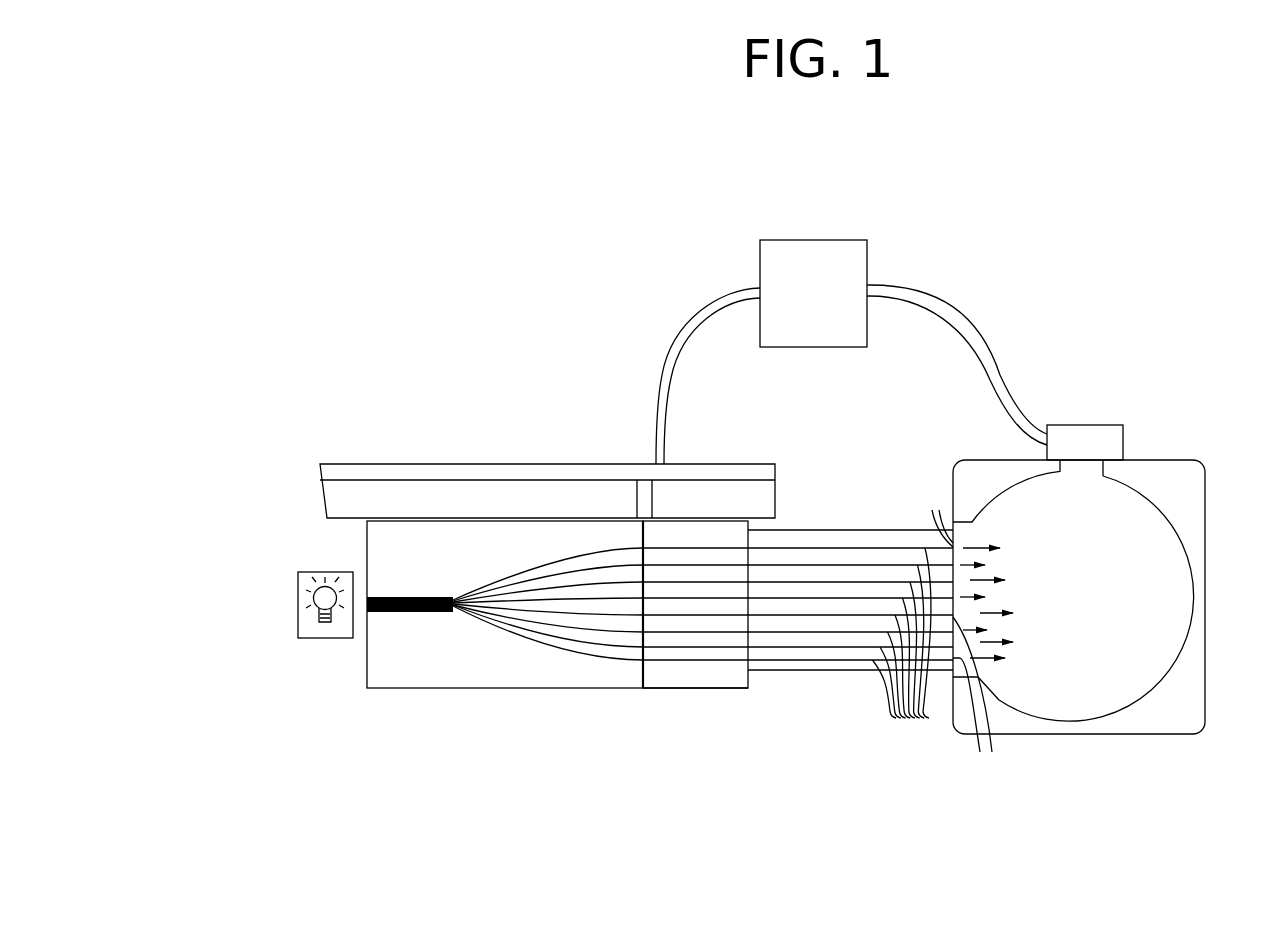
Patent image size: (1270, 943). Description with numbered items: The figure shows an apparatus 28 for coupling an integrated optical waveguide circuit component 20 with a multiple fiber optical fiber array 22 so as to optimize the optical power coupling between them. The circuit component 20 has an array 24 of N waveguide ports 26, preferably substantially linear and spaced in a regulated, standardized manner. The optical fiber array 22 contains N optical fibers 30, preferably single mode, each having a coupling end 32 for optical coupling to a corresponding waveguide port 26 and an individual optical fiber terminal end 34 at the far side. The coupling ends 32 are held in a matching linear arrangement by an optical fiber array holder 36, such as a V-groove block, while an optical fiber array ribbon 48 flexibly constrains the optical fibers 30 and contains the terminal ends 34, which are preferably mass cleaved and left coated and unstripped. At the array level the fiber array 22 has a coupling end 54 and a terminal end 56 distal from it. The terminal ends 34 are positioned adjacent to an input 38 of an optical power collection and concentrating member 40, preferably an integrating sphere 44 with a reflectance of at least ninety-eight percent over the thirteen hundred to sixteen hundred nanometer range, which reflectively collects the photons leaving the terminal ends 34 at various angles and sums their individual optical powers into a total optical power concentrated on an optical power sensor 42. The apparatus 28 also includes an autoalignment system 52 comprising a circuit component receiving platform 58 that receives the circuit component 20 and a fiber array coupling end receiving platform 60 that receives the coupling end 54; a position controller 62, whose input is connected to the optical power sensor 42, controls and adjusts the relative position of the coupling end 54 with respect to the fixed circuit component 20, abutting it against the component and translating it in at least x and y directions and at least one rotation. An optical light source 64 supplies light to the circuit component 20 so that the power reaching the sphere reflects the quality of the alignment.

The integrated optical waveguide circuit component 20 is at (450, 700).
The optical fiber array 22 is at (782, 716).
The array of waveguide ports 24 is at (637, 663).
The waveguide ports 26 is at (638, 592).
The apparatus 28 is at (1082, 490).
The optical fibers 30 is at (902, 648).
The coupling end 32 is at (653, 588).
The optical fiber terminal end 34 is at (959, 634).
The optical fiber array holder 36 is at (705, 689).
The input 38 is at (968, 500).
The optical power collection and concentrating member 40 is at (1080, 752).
The optical power sensor 42 is at (1100, 454).
The integrating sphere 44 is at (1150, 691).
The optical fiber array ribbon 48 is at (865, 675).
The autoalignment system 52 is at (810, 225).
The coupling end of fiber array 54 is at (650, 699).
The terminal end of fiber array 56 is at (942, 681).
The circuit component receiving platform 58 is at (456, 511).
The fiber array coupling end receiving platform 60 is at (691, 511).
The position controller 62 is at (748, 238).
The optical light source 64 is at (302, 650).